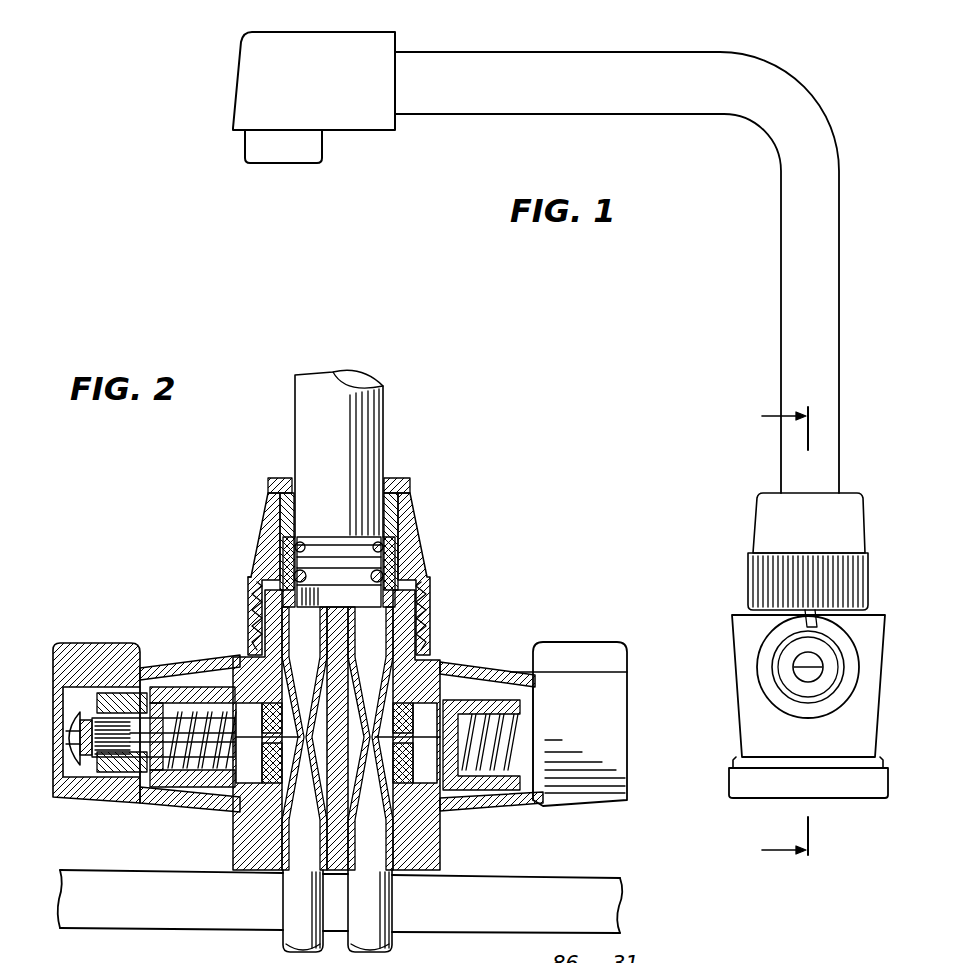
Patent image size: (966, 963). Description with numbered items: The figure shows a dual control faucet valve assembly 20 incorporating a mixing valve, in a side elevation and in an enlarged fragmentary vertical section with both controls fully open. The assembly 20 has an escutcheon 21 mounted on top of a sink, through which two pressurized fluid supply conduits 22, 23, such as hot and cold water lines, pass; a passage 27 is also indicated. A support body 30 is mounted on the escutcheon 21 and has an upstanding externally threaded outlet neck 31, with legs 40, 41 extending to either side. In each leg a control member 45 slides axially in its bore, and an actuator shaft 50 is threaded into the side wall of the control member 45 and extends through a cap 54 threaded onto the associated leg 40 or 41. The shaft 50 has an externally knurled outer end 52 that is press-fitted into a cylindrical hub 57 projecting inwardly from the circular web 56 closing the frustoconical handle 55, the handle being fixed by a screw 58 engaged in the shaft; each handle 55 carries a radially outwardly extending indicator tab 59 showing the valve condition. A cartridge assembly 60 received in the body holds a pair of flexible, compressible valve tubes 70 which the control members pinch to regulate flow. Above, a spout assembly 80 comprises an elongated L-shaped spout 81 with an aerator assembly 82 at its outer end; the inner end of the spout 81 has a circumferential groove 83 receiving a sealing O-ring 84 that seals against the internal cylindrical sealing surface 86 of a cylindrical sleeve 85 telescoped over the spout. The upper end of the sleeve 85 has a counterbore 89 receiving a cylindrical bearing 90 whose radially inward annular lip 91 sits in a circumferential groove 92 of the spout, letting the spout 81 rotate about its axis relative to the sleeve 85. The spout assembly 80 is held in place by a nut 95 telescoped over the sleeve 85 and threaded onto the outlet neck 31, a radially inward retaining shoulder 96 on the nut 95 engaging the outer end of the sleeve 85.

In FIG. 1, the dual control faucet valve assembly 20 is at (680, 278).
In FIG. 1, the escutcheon 21 is at (840, 790).
In FIG. 2, the escutcheon 21 is at (595, 888).
In FIG. 2, the pressurized fluid supply conduit 22 is at (287, 940).
In FIG. 2, the pressurized fluid supply conduit 23 is at (384, 943).
In FIG. 2, the tube passage 27 is at (478, 957).
In FIG. 1, the support body 30 is at (738, 721).
In FIG. 2, the support body 30 is at (235, 832).
In FIG. 2, the outlet neck 31 is at (432, 621).
In FIG. 2, the leg 40 is at (470, 787).
In FIG. 2, the leg 41 is at (203, 690).
In FIG. 2, the control member 45 is at (462, 710).
In FIG. 2, the actuator shaft 50 is at (533, 808).
In FIG. 2, the knurled outer end 52 is at (113, 745).
In FIG. 2, the cap 54 is at (152, 778).
In FIG. 1, the handle 55 is at (851, 702).
In FIG. 1, the circular web 56 is at (830, 652).
In FIG. 2, the circular web 56 is at (77, 777).
In FIG. 2, the cylindrical hub 57 is at (110, 690).
In FIG. 1, the screw 58 is at (822, 673).
In FIG. 2, the screw 58 is at (65, 748).
In FIG. 1, the indicator tab 59 is at (818, 613).
In FIG. 2, the indicator tab 59 is at (75, 648).
In FIG. 2, the cartridge assembly 60 is at (432, 655).
In FIG. 2, the valve tube 70 is at (258, 656).
In FIG. 1, the spout assembly 80 is at (865, 444).
In FIG. 1, the spout 81 is at (792, 305).
In FIG. 2, the spout 81 is at (378, 421).
In FIG. 1, the aerator assembly 82 is at (348, 113).
In FIG. 2, the circumferential groove 83 is at (378, 571).
In FIG. 2, the sealing O-ring 84 is at (382, 580).
In FIG. 2, the cylindrical sleeve 85 is at (421, 522).
In FIG. 2, the internal cylindrical sealing surface 86 is at (298, 556).
In FIG. 2, the counterbore 89 is at (410, 482).
In FIG. 2, the cylindrical bearing 90 is at (283, 510).
In FIG. 2, the annular lip 91 is at (306, 545).
In FIG. 2, the circumferential groove 92 is at (355, 540).
In FIG. 1, the nut 95 is at (780, 522).
In FIG. 2, the nut 95 is at (250, 583).
In FIG. 2, the retaining shoulder 96 is at (282, 477).